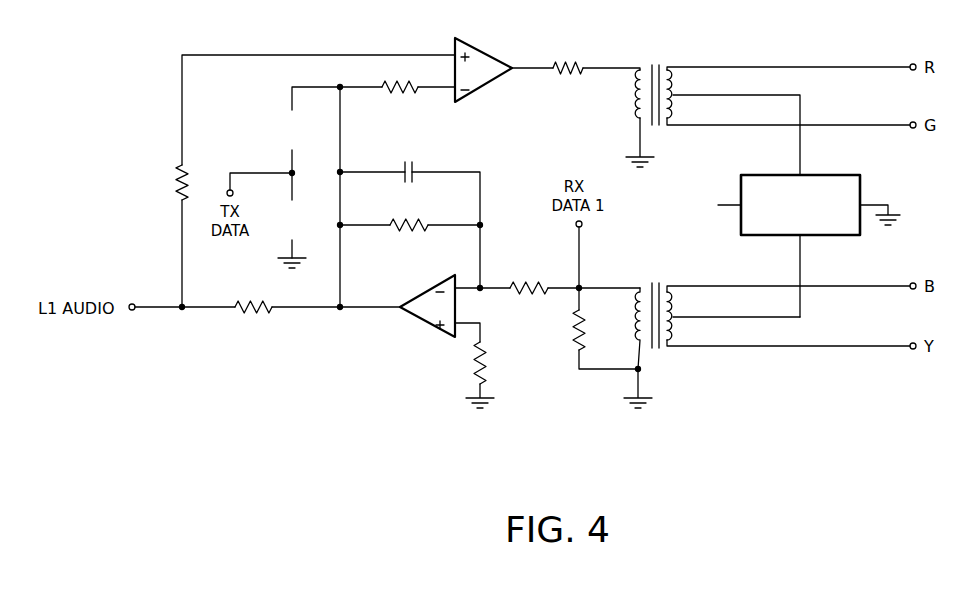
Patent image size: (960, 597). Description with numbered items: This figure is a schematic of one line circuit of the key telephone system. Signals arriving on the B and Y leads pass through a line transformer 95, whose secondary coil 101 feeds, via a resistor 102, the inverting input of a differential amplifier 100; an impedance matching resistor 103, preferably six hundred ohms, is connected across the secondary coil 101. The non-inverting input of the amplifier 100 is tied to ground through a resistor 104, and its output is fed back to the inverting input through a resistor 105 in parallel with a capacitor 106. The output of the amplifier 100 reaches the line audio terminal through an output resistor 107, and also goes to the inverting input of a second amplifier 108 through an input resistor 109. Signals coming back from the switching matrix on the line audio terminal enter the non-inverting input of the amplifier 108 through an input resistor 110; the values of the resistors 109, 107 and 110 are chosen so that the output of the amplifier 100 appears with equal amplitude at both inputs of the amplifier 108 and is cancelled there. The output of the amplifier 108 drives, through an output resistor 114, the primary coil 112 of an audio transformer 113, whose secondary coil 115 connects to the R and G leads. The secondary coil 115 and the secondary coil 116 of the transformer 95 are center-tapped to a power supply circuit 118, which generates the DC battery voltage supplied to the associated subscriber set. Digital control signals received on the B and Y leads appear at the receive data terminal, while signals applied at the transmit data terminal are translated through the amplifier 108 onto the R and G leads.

The receive line transformer 95 is at (748, 308).
The differential amplifier 100 is at (420, 322).
The secondary coil 101 is at (632, 314).
The resistor 102 is at (527, 283).
The impedance matching resistor 103 is at (573, 329).
The resistor 104 is at (476, 364).
The resistor 105 is at (408, 233).
The capacitor 106 is at (413, 168).
The output resistor 107 is at (256, 315).
The amplifier 108 is at (480, 52).
The input resistor 109 is at (404, 94).
The input resistor 110 is at (176, 184).
The primary coil 112 is at (636, 92).
The audio transformer 113 is at (739, 92).
The output resistor 114 is at (567, 66).
The secondary coil 115 is at (676, 78).
The secondary coil 116 is at (673, 345).
The power supply circuit 118 is at (765, 175).